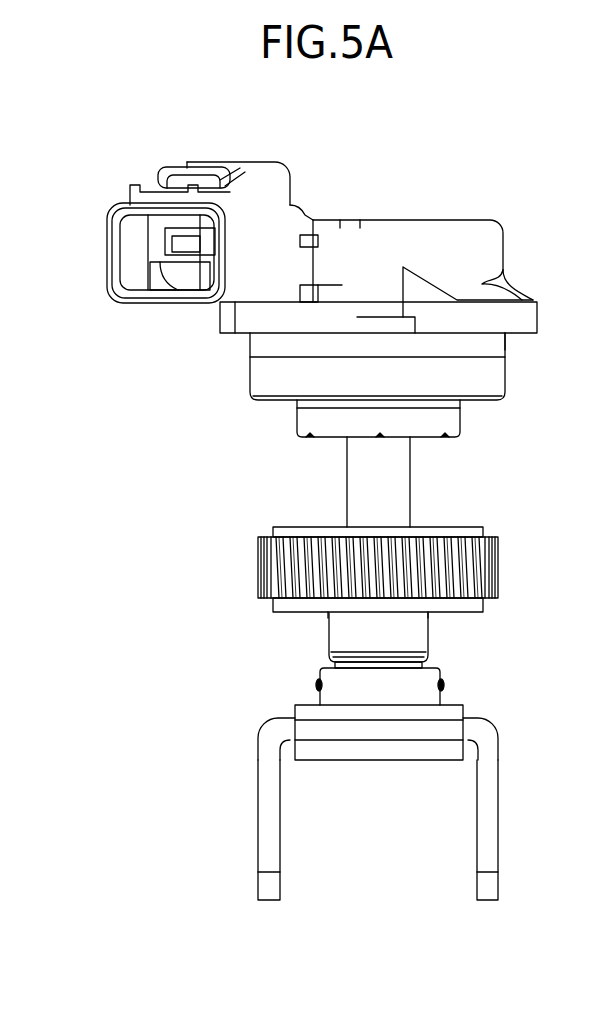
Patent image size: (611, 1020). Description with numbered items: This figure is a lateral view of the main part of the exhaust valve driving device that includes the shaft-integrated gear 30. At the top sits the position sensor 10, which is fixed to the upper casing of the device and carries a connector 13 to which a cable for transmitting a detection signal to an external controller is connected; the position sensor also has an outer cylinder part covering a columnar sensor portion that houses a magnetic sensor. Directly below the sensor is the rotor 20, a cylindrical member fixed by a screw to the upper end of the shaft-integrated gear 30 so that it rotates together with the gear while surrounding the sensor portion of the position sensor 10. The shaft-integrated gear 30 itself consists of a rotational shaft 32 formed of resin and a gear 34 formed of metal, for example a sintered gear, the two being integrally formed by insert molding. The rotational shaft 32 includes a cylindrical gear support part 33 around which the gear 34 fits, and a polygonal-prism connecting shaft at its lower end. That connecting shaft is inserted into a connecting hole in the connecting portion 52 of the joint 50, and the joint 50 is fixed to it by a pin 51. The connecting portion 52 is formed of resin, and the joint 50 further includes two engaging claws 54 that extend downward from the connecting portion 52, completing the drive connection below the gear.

The position sensor 10 is at (505, 253).
The connector 13 is at (106, 255).
The rotor 20 is at (460, 433).
The shaft-integrated gear 30 is at (410, 552).
The rotational shaft 32 is at (410, 508).
The gear support part 33 is at (273, 530).
The gear 34 is at (410, 567).
The joint 50 is at (391, 780).
The pin 51 is at (316, 685).
The connecting portion 52 is at (295, 713).
The engaging claws 54 is at (258, 805).